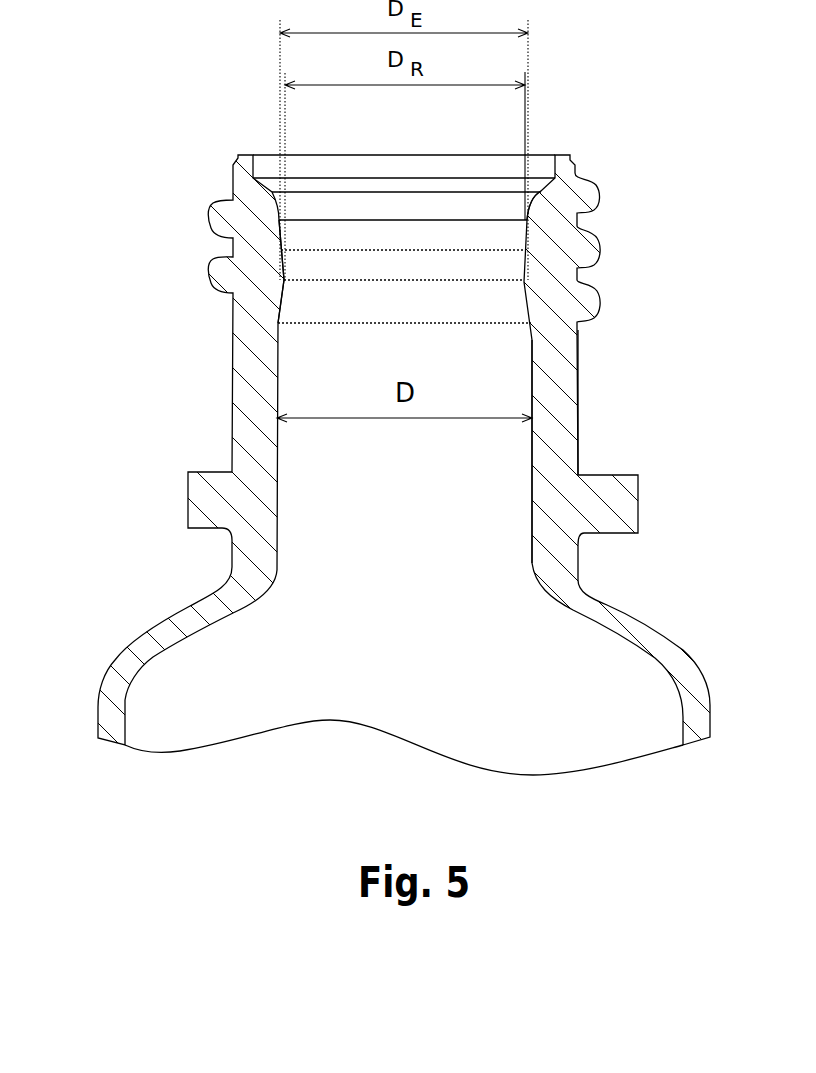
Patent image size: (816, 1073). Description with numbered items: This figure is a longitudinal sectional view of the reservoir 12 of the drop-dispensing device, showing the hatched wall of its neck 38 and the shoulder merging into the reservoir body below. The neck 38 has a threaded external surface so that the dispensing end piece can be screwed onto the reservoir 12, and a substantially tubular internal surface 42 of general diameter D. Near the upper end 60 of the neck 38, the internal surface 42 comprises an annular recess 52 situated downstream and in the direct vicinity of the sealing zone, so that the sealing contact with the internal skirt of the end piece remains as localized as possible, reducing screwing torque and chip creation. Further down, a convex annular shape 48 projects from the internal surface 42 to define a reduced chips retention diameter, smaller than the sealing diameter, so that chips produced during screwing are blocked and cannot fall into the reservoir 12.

The reservoir 12 is at (658, 618).
The neck 38 is at (547, 487).
The internal surface 42 is at (530, 453).
The convex annular shape 48 is at (287, 282).
The annular recess 52 is at (538, 197).
The upper end 60 is at (559, 155).